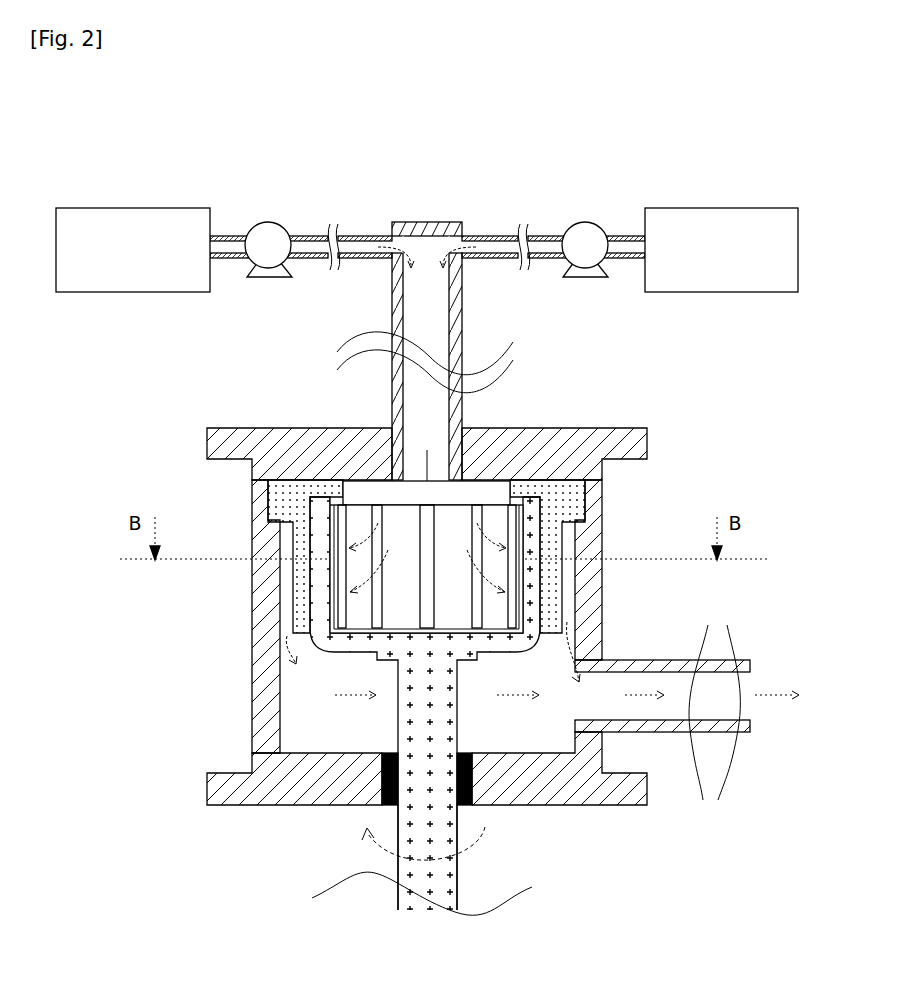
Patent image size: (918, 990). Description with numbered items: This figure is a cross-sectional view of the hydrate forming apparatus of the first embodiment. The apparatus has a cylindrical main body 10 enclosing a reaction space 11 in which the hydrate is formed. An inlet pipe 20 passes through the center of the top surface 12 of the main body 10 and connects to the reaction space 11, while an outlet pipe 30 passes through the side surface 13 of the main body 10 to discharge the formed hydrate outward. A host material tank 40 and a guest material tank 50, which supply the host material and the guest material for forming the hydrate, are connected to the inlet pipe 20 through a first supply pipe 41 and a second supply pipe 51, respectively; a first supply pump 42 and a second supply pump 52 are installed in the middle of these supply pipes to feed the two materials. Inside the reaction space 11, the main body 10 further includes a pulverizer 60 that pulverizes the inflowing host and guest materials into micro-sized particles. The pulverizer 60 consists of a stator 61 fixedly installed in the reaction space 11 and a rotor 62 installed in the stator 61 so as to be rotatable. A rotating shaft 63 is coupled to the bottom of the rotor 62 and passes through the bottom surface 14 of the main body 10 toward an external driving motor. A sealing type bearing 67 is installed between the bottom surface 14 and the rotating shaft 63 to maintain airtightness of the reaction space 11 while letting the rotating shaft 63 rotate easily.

The main body 10 is at (345, 617).
The reaction space 11 is at (294, 737).
The top surface 12 is at (292, 430).
The side surface 13 is at (252, 668).
The bottom surface 14 is at (290, 806).
The inlet pipe 20 is at (462, 340).
The outlet pipe 30 is at (728, 733).
The host material tank 40 is at (110, 208).
The first supply pipe 41 is at (230, 236).
The first supply pump 42 is at (282, 232).
The guest material tank 50 is at (770, 208).
The second supply pipe 51 is at (623, 236).
The second supply pump 52 is at (567, 232).
The pulverizer 60 is at (584, 537).
The stator 61 is at (583, 478).
The rotor 62 is at (537, 595).
The rotating shaft 63 is at (455, 728).
The sealing type bearing 67 is at (474, 806).